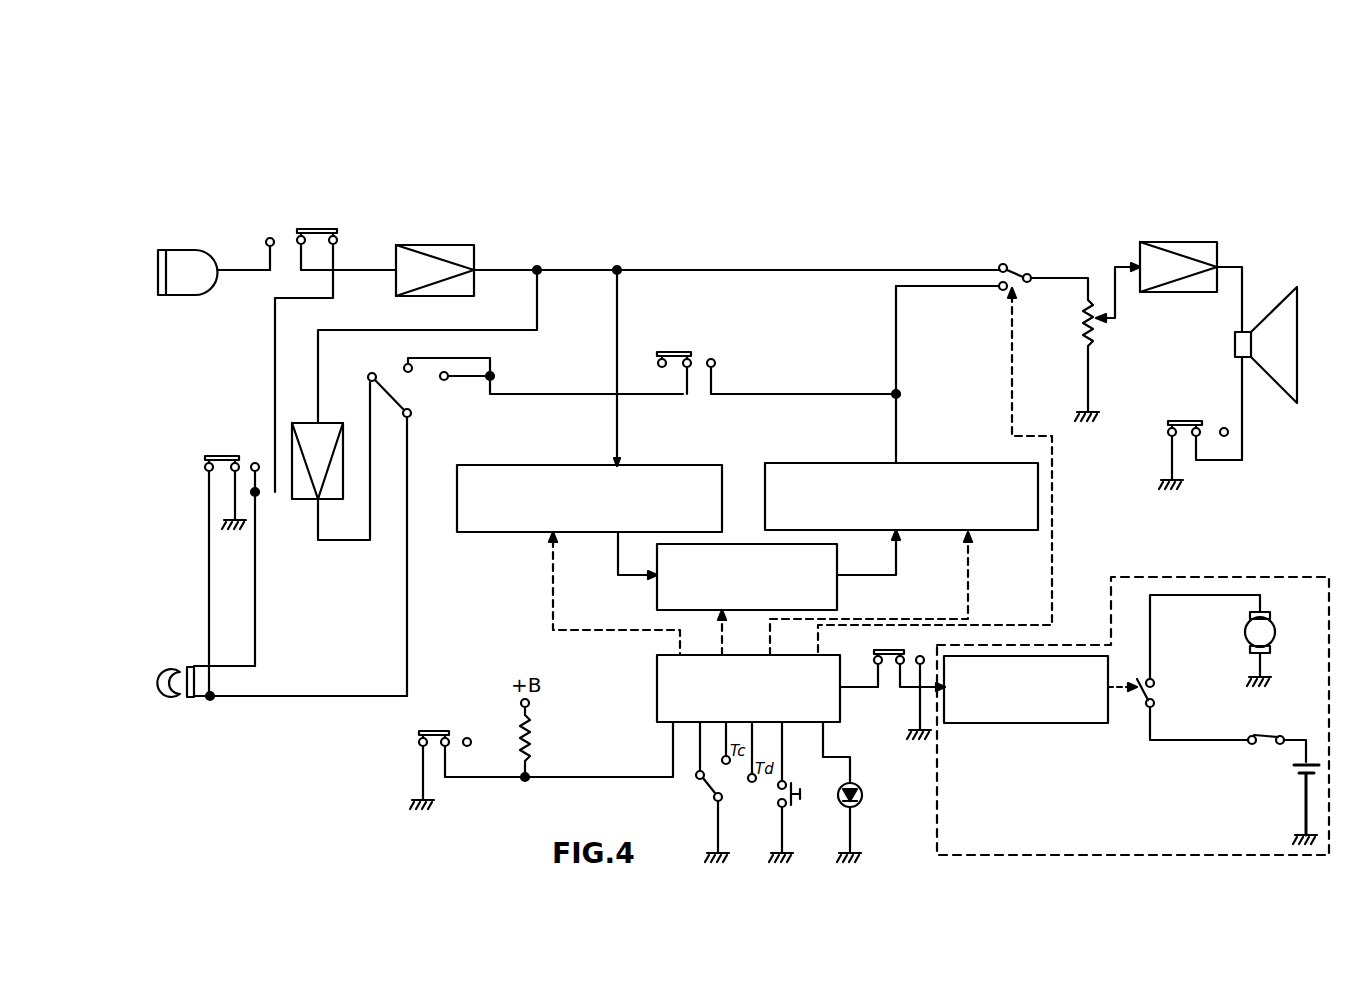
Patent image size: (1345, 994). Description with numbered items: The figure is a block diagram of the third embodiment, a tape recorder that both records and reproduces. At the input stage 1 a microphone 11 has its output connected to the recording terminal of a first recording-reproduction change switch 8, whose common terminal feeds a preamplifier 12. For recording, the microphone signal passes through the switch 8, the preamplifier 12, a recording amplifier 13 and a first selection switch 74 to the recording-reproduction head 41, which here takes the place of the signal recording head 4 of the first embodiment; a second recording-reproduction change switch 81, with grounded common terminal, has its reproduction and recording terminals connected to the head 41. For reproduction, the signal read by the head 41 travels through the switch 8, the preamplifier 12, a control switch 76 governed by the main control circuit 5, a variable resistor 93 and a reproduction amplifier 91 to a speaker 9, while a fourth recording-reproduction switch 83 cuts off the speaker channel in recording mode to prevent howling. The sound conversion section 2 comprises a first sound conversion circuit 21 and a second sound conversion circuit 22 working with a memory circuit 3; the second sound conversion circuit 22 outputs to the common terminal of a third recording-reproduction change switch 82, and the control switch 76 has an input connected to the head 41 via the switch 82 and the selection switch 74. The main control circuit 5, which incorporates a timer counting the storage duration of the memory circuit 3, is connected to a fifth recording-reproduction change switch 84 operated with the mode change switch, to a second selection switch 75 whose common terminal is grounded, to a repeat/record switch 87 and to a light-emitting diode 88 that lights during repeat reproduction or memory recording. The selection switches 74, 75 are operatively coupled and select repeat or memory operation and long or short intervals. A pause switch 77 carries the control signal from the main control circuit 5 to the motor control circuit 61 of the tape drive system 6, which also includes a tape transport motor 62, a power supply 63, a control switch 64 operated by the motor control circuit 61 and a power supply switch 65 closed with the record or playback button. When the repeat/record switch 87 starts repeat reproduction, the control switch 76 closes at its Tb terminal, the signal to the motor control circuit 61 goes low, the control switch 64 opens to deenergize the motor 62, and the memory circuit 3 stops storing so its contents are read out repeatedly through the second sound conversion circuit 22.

The sound input section 1 is at (211, 254).
The microphone 11 is at (206, 255).
The first recording-reproduction change switch 8 is at (310, 229).
The preamplifier 12 is at (462, 246).
The recording amplifier 13 is at (331, 423).
The first selection switch 74 is at (434, 395).
The second selection switch 75 is at (702, 789).
The control switch 76 is at (1024, 264).
The pause switch 77 is at (893, 650).
The second recording-reproduction change switch 81 is at (225, 454).
The third recording-reproduction change switch 82 is at (666, 352).
The fourth recording-reproduction switch 83 is at (1186, 420).
The fifth recording-reproduction change switch 84 is at (430, 733).
The sound conversion section 2 is at (747, 476).
The first sound conversion circuit 21 is at (645, 465).
The second sound conversion circuit 22 is at (940, 463).
The memory circuit 3 is at (735, 545).
The main control circuit 5 is at (735, 655).
The speaker 9 is at (1292, 300).
The reproduction amplifier 91 is at (1200, 242).
The variable resistor 93 is at (1086, 336).
The signal recording head 4 is at (282, 640).
The recording-reproduction head 41 is at (180, 668).
The repeat/record switch 87 is at (793, 803).
The light-emitting diode 88 is at (862, 800).
The system for driving a signal recording medium 6 is at (1183, 577).
The motor control circuit 61 is at (1040, 723).
The tape transport motor 62 is at (1278, 630).
The power supply 63 is at (1313, 763).
The control switch 64 is at (1143, 680).
The power supply switch 65 is at (1254, 730).